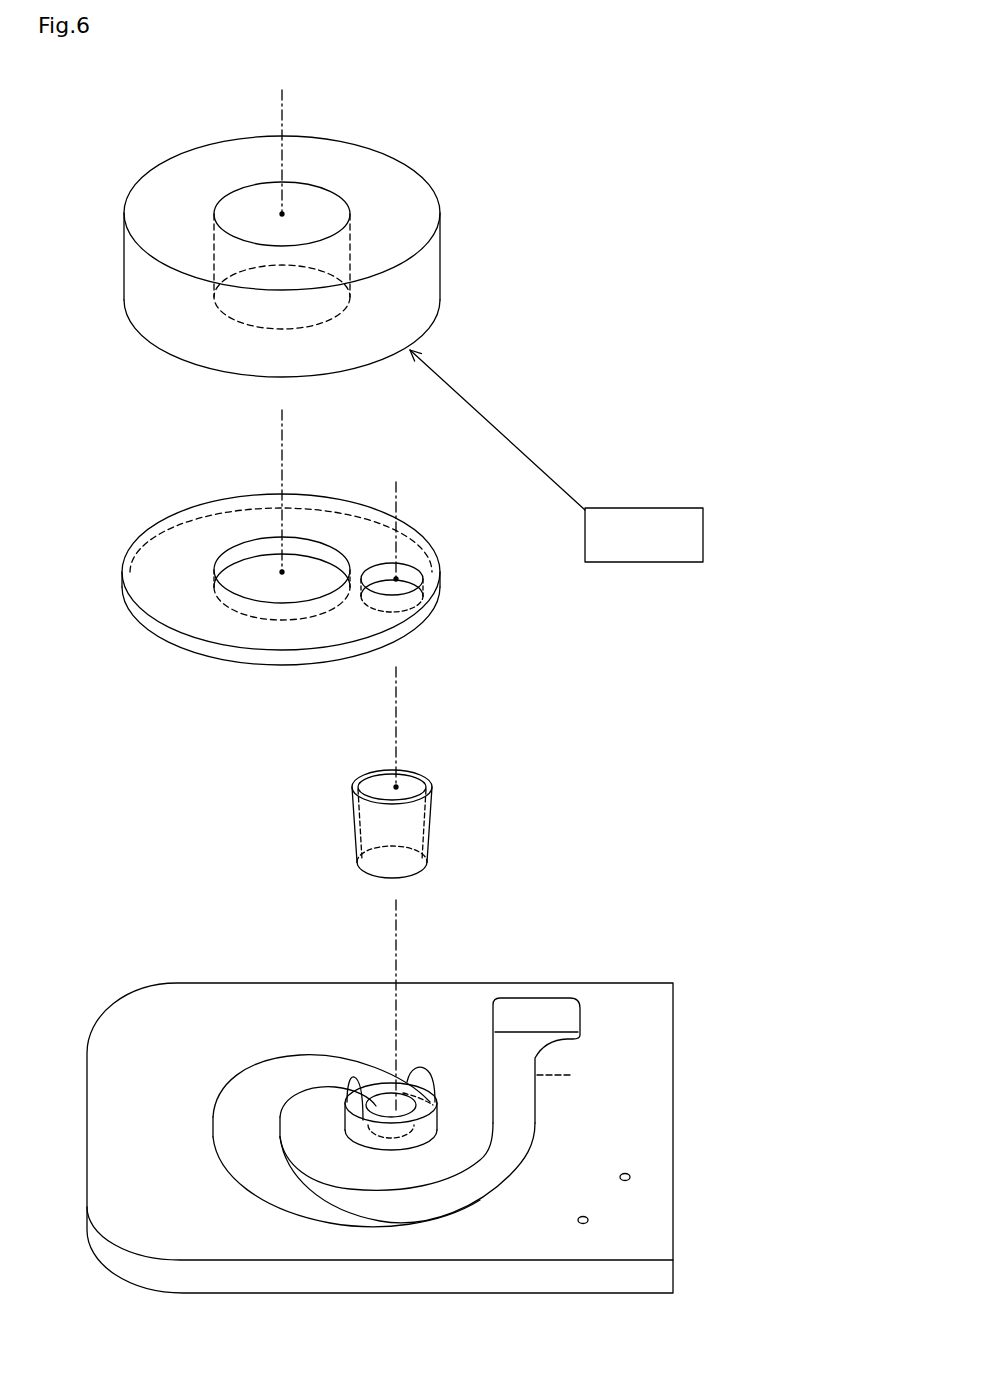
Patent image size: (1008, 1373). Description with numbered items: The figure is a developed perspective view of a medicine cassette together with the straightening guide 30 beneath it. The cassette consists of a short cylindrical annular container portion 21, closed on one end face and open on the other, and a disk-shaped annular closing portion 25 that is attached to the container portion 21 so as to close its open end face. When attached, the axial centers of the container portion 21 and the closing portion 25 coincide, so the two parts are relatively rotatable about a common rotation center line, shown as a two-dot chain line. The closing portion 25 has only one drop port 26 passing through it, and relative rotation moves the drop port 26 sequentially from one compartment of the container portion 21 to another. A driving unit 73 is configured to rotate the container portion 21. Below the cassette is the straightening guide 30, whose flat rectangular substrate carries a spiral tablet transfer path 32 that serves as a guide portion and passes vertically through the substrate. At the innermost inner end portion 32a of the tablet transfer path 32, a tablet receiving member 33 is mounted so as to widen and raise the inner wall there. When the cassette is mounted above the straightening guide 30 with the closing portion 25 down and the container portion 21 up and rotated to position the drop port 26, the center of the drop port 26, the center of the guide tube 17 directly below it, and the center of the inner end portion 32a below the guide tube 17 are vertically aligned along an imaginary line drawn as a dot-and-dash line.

The container portion 21 is at (217, 142).
The closing portion 25 is at (138, 537).
The drop port 26 is at (422, 575).
The guide tube 17 is at (433, 799).
The driving unit 73 is at (655, 563).
The straightening guide 30 is at (693, 1015).
The tablet transfer path 32 is at (258, 1127).
The inner end portion 32a is at (382, 1107).
The tablet receiving member 33 is at (423, 1080).